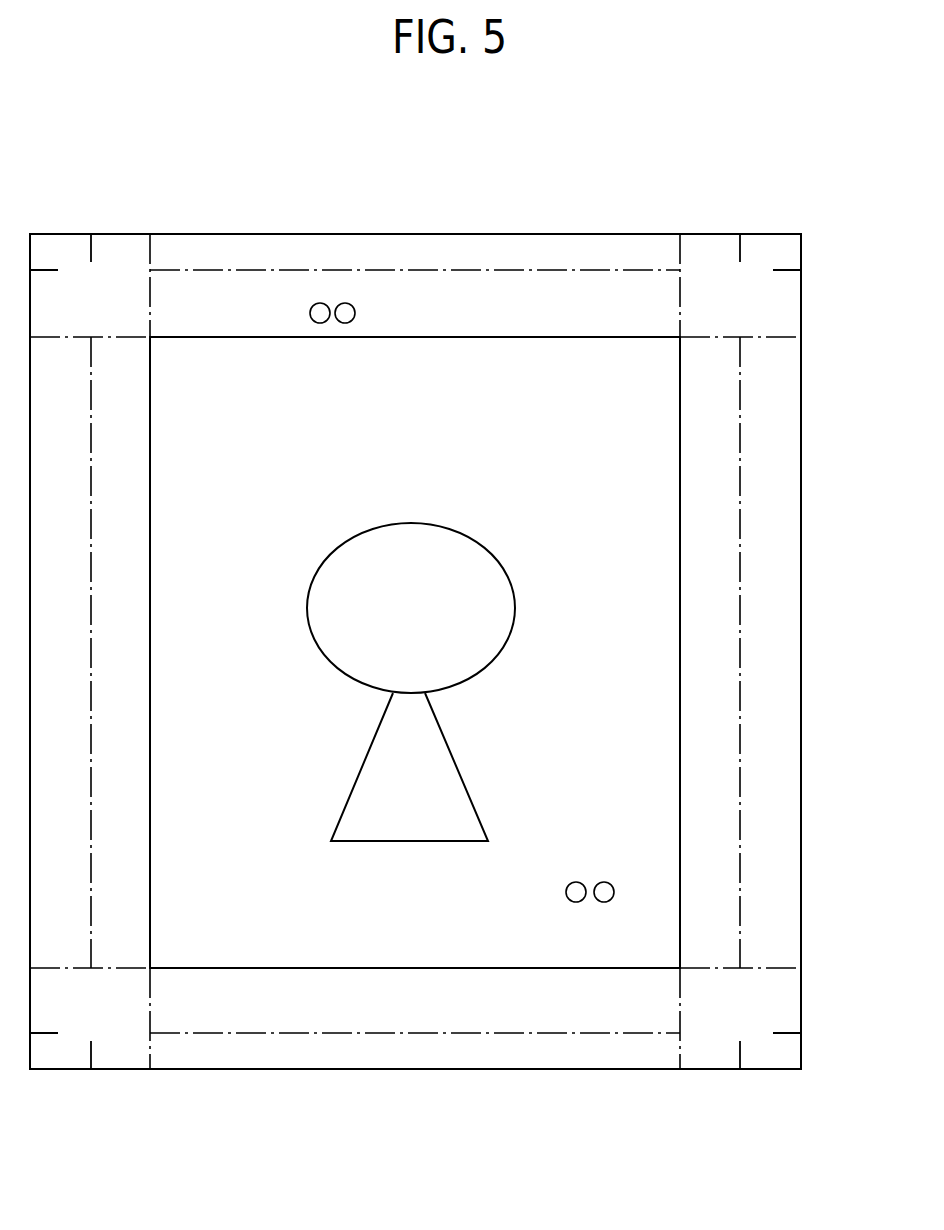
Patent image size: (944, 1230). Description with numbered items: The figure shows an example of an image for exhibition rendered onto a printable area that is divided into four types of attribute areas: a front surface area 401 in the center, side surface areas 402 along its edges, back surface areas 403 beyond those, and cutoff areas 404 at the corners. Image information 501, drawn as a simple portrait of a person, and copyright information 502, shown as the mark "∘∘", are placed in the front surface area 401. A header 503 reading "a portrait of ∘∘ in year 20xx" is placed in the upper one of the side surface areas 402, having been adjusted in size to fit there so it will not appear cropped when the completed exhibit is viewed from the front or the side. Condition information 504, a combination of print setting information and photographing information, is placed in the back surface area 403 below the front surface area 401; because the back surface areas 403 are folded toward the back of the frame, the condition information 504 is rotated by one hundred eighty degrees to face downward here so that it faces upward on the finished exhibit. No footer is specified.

The front surface area 401 is at (630, 368).
The side surface areas 402 is at (535, 318).
The back surface areas 403 is at (195, 248).
The cutoff areas 404 is at (118, 248).
The image information 501 is at (460, 533).
The copyright information 502 is at (594, 877).
The header 503 is at (333, 298).
The condition information 504 is at (633, 1038).